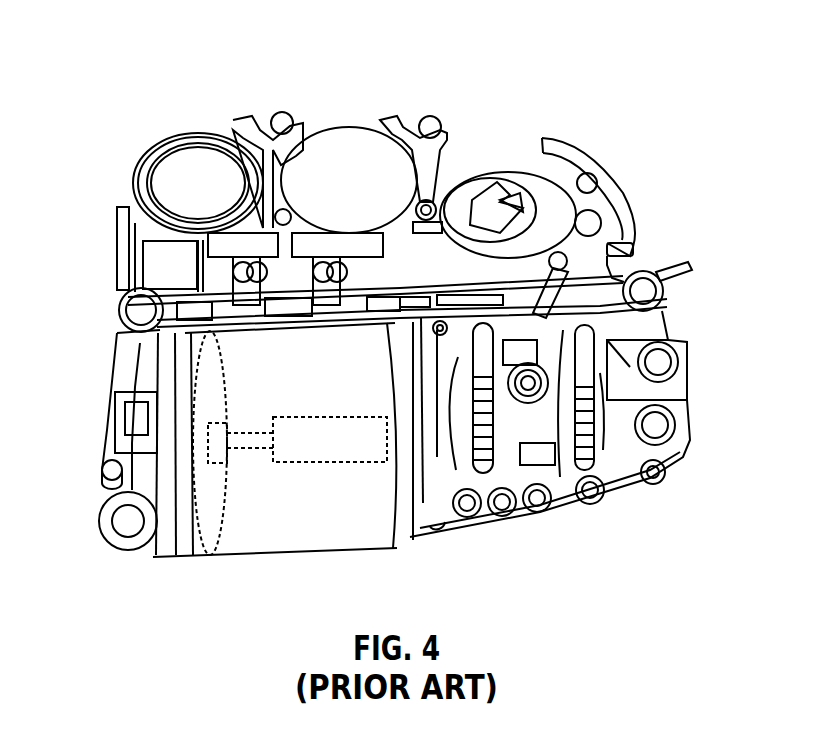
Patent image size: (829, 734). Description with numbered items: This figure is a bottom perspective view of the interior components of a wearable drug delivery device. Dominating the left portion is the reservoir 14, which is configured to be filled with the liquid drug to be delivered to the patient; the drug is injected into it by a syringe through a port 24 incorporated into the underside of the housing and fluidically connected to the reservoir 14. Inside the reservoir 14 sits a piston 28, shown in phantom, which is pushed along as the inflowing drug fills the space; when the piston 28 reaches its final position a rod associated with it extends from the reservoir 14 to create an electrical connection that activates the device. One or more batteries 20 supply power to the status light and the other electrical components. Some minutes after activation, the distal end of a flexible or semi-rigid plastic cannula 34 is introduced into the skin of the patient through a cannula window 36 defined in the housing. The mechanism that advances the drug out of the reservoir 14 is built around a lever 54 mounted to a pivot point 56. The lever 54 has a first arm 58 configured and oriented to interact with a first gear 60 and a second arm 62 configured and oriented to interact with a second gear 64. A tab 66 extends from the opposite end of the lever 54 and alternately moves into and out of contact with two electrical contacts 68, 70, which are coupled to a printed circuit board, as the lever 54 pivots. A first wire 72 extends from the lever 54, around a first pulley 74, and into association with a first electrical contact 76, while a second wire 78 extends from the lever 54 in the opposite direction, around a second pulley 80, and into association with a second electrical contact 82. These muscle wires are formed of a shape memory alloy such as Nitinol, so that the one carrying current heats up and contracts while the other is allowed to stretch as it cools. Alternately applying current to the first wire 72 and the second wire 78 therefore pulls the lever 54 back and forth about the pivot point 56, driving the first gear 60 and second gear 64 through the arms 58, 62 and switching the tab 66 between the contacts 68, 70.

The reservoir 14 is at (332, 527).
The batteries 20 is at (340, 147).
The port 24 is at (108, 527).
The piston 28 is at (212, 505).
The cannula 34 is at (666, 268).
The cannula window 36 is at (622, 249).
The lever 54 is at (537, 423).
The pivot point 56 is at (530, 384).
The first arm 58 is at (470, 330).
The first gear 60 is at (480, 433).
The second arm 62 is at (573, 354).
The second gear 64 is at (593, 447).
The tab 66 is at (545, 506).
The electrical contact 68 is at (596, 500).
The electrical contact 70 is at (502, 507).
The first wire 72 is at (170, 295).
The first pulley 74 is at (135, 308).
The first electrical contact 76 is at (255, 270).
The second wire 78 is at (587, 277).
The second pulley 80 is at (650, 293).
The second electrical contact 82 is at (337, 272).